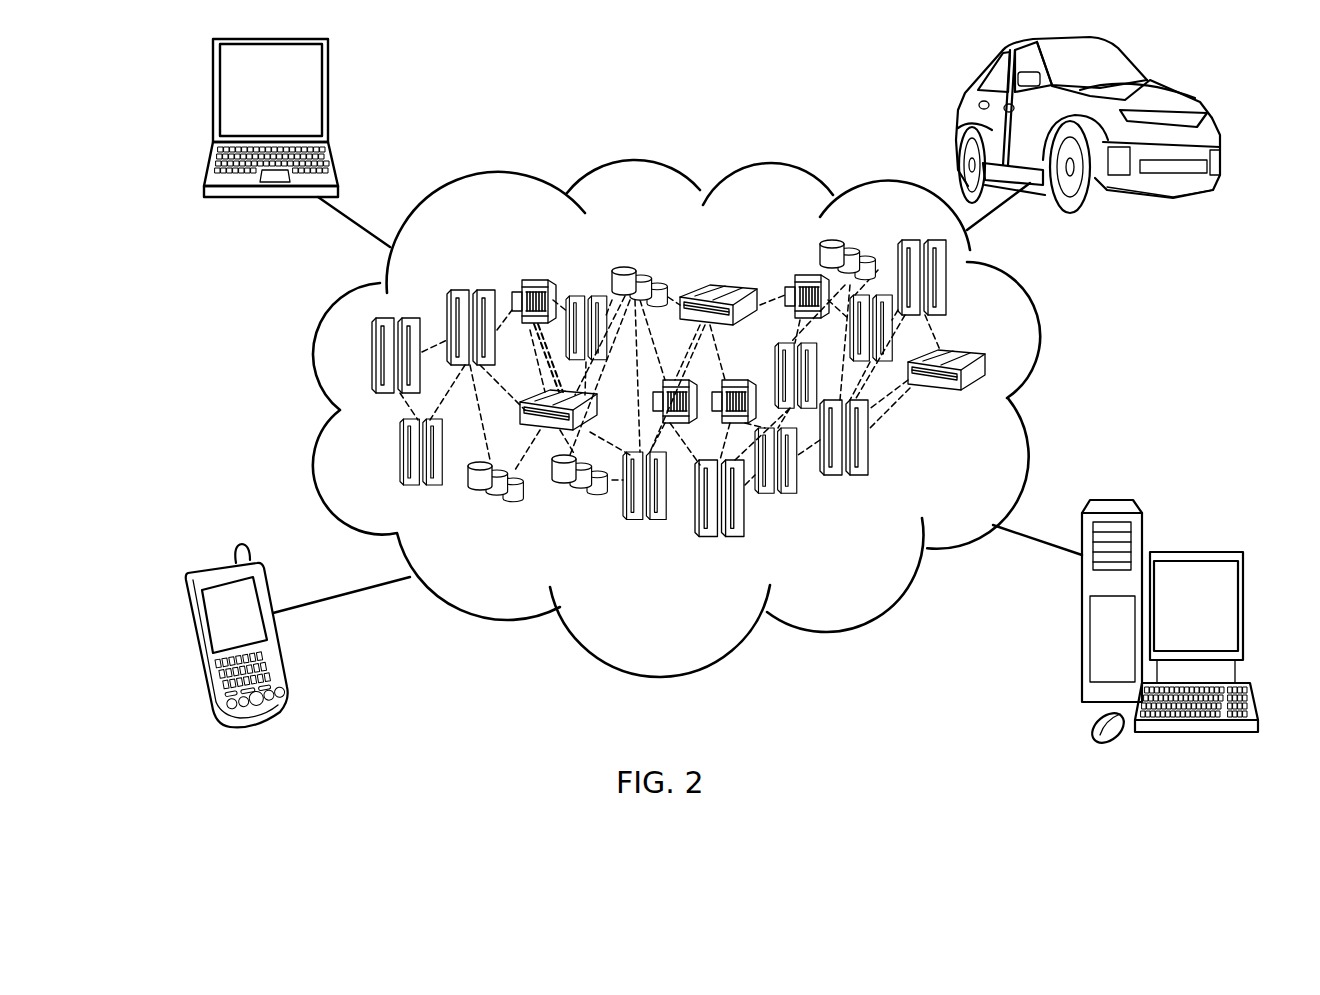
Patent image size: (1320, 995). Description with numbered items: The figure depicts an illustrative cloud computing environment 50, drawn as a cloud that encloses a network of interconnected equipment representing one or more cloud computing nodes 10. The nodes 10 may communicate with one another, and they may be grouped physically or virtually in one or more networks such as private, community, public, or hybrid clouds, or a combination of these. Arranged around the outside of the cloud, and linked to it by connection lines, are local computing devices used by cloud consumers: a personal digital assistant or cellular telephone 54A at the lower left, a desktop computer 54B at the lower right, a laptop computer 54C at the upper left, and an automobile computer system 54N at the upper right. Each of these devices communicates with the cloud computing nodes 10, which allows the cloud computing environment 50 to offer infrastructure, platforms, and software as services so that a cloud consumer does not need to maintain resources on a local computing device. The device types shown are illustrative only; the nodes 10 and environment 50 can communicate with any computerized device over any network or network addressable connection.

The cloud computing nodes 10 is at (719, 393).
The cloud computing environment 50 is at (1027, 326).
The personal digital assistant (PDA) or cellular telephone 54A is at (198, 640).
The desktop computer 54B is at (1243, 590).
The laptop computer 54C is at (213, 97).
The automobile computer system 54N is at (1187, 92).